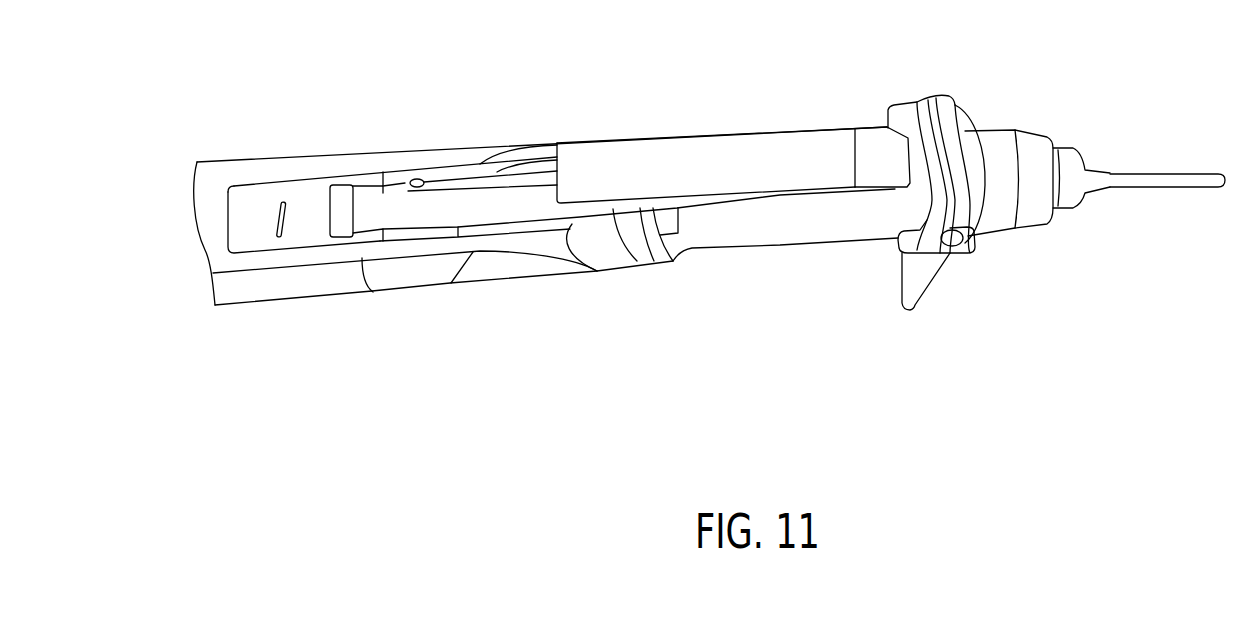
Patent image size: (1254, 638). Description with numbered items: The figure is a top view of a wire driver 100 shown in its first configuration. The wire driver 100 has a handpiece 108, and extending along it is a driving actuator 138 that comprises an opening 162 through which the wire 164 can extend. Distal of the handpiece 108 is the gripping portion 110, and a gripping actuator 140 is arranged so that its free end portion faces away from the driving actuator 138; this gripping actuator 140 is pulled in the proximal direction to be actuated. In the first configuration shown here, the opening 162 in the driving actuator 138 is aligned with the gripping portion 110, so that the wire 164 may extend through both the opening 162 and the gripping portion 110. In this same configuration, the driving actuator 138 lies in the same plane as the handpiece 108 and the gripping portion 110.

The wire driver 100 is at (721, 247).
The handpiece 108 is at (288, 157).
The gripping portion 110 is at (964, 125).
The driving actuator 138 is at (671, 120).
The gripping actuator 140 is at (942, 297).
The opening 162 is at (548, 143).
The wire 164 is at (1215, 189).